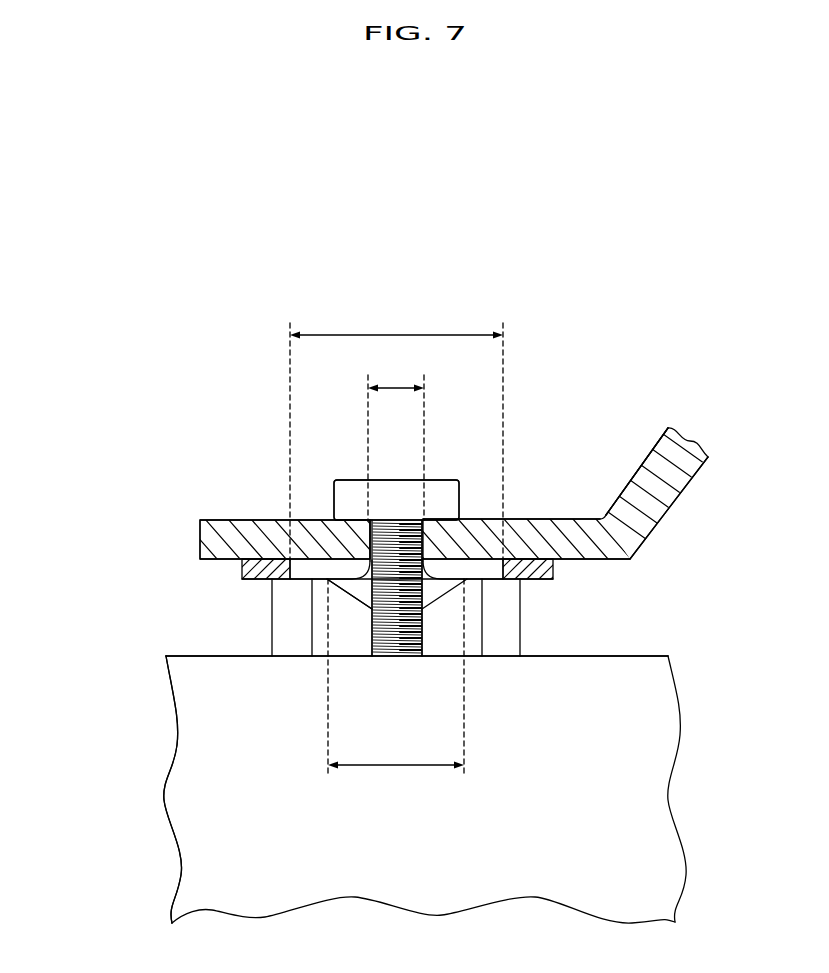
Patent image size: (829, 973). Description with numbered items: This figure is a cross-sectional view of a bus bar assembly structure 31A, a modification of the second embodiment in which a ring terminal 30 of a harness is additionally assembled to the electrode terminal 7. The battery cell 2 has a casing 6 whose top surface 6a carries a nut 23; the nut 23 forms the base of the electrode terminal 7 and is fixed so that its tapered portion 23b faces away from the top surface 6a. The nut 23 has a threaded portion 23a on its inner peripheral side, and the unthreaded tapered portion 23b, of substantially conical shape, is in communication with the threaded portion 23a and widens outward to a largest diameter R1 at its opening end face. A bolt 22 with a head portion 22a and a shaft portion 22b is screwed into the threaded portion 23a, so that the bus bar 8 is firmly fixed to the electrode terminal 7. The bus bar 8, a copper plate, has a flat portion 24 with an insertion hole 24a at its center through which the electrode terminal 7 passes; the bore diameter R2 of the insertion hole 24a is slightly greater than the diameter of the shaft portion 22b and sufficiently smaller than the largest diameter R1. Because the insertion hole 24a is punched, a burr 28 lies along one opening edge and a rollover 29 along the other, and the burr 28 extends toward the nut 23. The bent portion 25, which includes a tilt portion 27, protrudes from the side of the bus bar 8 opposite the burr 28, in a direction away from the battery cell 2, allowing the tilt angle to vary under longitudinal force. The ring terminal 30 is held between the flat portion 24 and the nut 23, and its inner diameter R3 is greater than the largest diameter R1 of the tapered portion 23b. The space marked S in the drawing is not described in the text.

The bus bar assembly structure 31A is at (156, 314).
The bus bar 8 is at (185, 493).
The flat portion 24 is at (232, 535).
The insertion hole 24a is at (367, 556).
The head portion 22a is at (350, 490).
The bolt 22 is at (393, 490).
The rollover 29 is at (425, 520).
The electrode terminal 7 is at (491, 447).
The bent portion 25 is at (639, 442).
The tilt portion 27 is at (637, 500).
The ring terminal 30 is at (250, 566).
The space S is at (350, 589).
The top surface 6a is at (196, 655).
The tapered portion 23b is at (441, 587).
The battery cell 2 is at (147, 738).
The nut 23 is at (289, 652).
The burr 28 is at (371, 607).
The threaded portion 23a is at (373, 628).
The shaft portion 22b is at (423, 628).
The casing 6 is at (655, 783).
The largest diameter R1 is at (396, 686).
The bore diameter R2 is at (396, 441).
The inner diameter R3 is at (396, 434).